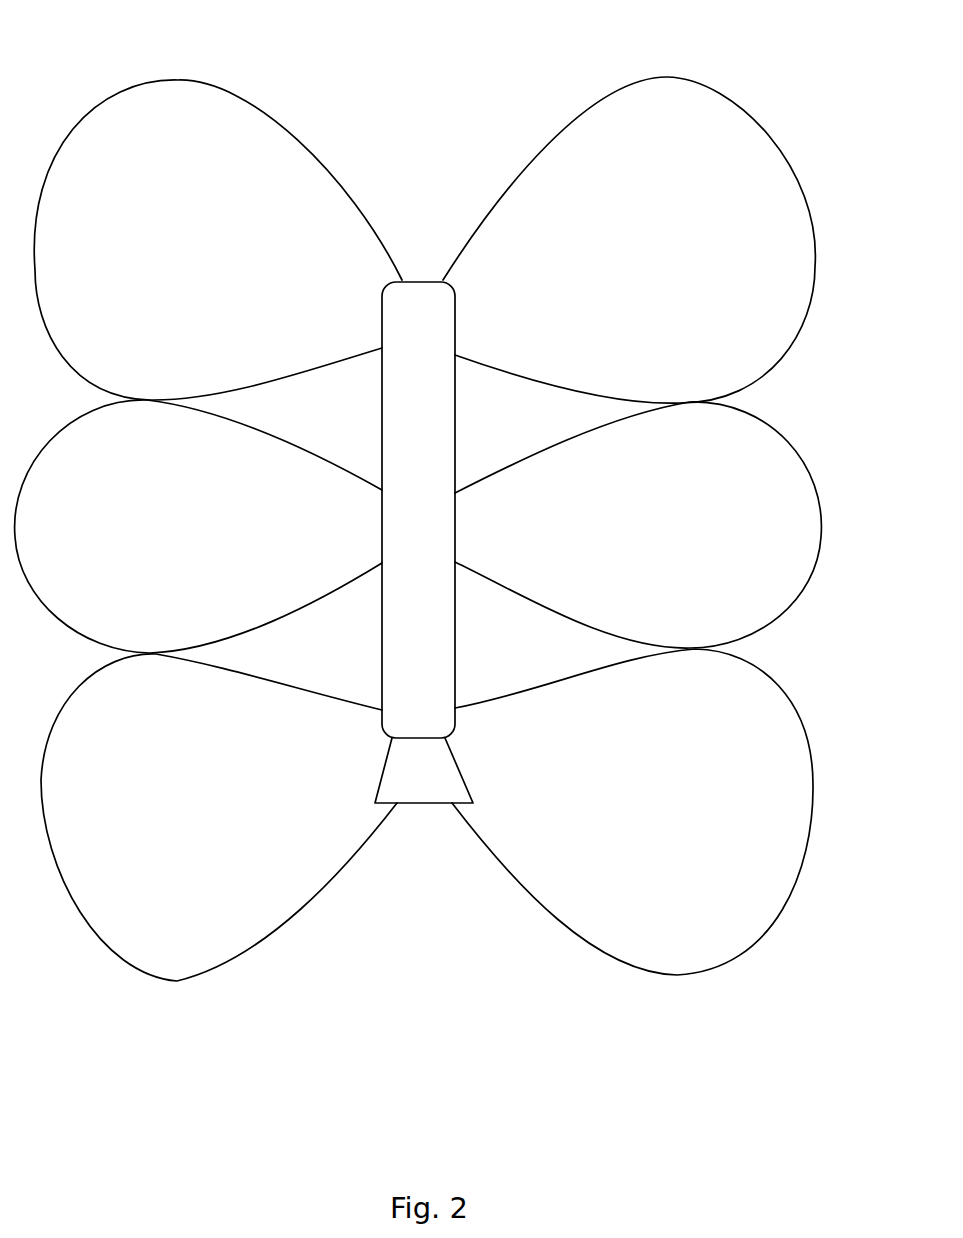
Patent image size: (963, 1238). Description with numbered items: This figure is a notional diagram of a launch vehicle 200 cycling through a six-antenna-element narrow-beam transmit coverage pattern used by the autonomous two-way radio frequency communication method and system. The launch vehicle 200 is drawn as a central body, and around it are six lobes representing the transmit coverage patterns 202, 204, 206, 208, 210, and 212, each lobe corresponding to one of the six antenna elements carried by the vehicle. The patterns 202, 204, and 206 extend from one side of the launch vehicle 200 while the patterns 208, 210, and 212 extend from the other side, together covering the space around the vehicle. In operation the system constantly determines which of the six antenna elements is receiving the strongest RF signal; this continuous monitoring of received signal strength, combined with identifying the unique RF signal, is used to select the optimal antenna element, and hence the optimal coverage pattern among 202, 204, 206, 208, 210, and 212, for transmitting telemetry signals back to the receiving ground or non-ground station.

The launch vehicle 200 is at (415, 280).
The transmit coverage pattern 202 is at (783, 150).
The transmit coverage pattern 204 is at (762, 635).
The transmit coverage pattern 206 is at (737, 957).
The transmit coverage pattern 208 is at (132, 971).
The transmit coverage pattern 210 is at (68, 630).
The transmit coverage pattern 212 is at (117, 98).